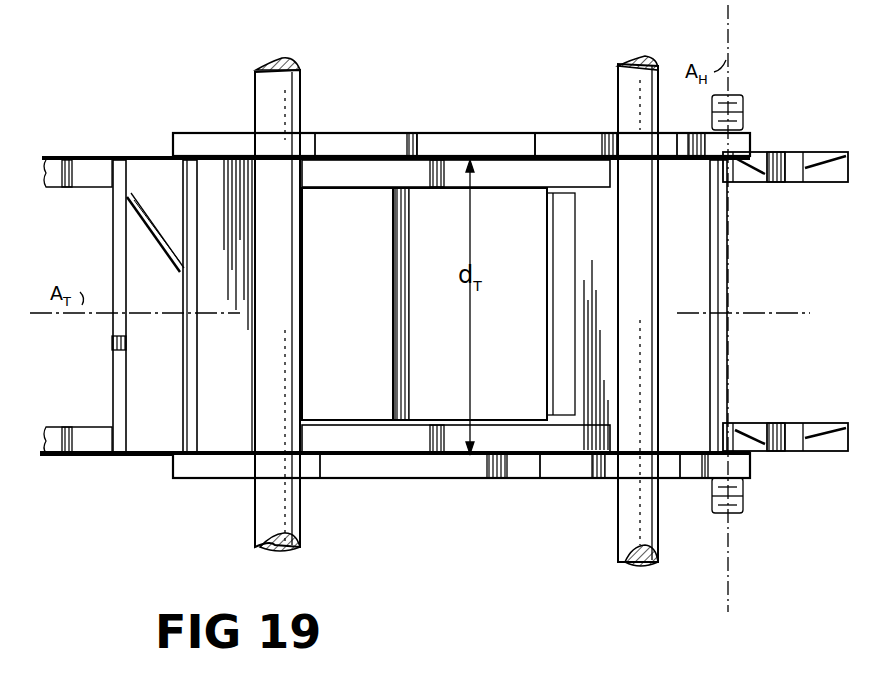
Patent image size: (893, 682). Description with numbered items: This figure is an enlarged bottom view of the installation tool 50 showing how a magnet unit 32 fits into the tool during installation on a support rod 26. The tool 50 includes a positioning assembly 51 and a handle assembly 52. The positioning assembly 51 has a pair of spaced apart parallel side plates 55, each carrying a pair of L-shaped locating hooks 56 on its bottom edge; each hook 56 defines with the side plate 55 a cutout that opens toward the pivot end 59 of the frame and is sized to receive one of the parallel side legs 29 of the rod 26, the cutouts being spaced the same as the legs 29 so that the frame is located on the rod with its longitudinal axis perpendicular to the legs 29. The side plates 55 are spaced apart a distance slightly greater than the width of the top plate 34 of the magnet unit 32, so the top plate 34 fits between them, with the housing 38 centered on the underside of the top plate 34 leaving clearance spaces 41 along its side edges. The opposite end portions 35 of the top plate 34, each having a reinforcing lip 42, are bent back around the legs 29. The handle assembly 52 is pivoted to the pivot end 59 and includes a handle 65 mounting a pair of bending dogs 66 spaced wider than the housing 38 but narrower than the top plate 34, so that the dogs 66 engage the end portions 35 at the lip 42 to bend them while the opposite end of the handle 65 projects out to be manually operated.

The support rod 26 is at (290, 58).
The side leg 29 is at (300, 96).
The installation tool 50 is at (176, 130).
The top plate 34 is at (152, 160).
The handle 65 is at (100, 180).
The L-shaped locating hook 56 is at (306, 138).
The side plate 55 is at (478, 136).
The positioning assembly 51 is at (458, 134).
The clearance space 41 is at (378, 170).
The housing 38 is at (540, 228).
The reinforcing lip 42 is at (120, 372).
The magnet unit 32 is at (108, 344).
The handle assembly 52 is at (86, 466).
The end portion 35 is at (155, 438).
The bending dog 66 is at (776, 186).
The pivot end 59 is at (746, 134).